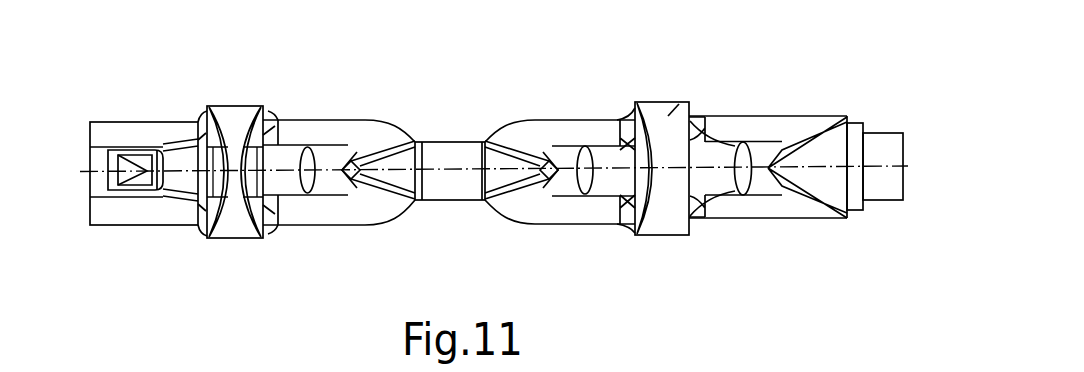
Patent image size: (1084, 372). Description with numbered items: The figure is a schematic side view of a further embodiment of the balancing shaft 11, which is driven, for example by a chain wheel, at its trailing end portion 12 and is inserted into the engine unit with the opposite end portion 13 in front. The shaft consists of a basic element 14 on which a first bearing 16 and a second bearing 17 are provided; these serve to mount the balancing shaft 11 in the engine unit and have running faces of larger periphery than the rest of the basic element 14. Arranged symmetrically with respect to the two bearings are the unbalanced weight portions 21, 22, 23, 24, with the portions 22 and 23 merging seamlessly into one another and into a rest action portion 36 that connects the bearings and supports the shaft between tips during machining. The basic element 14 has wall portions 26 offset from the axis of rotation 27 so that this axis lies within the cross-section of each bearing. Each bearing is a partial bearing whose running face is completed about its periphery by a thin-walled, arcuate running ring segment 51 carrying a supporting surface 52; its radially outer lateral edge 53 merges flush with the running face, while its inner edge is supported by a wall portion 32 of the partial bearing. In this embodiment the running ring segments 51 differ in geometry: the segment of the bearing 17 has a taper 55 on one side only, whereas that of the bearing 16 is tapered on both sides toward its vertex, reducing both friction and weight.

The balancing shaft 11 is at (813, 77).
The trailing end portion 12 is at (892, 112).
The end portion 13 is at (94, 244).
The basic element 14 is at (414, 222).
The first bearing 16 is at (257, 252).
The second bearing 17 is at (652, 262).
The unbalanced weight portion 21 is at (165, 240).
The unbalanced weight portion 22 is at (298, 246).
The unbalanced weight portion 23 is at (569, 250).
The unbalanced weight portion 24 is at (795, 252).
The wall portion 26 is at (568, 177).
The axis of rotation 27 is at (882, 176).
The wall portion 32 is at (630, 208).
The rest action portion 36 is at (457, 120).
The running ring segment 51 is at (216, 262).
The supporting surface 52 is at (227, 232).
The radially outer lateral edge 53 is at (721, 142).
The taper 55 is at (632, 150).